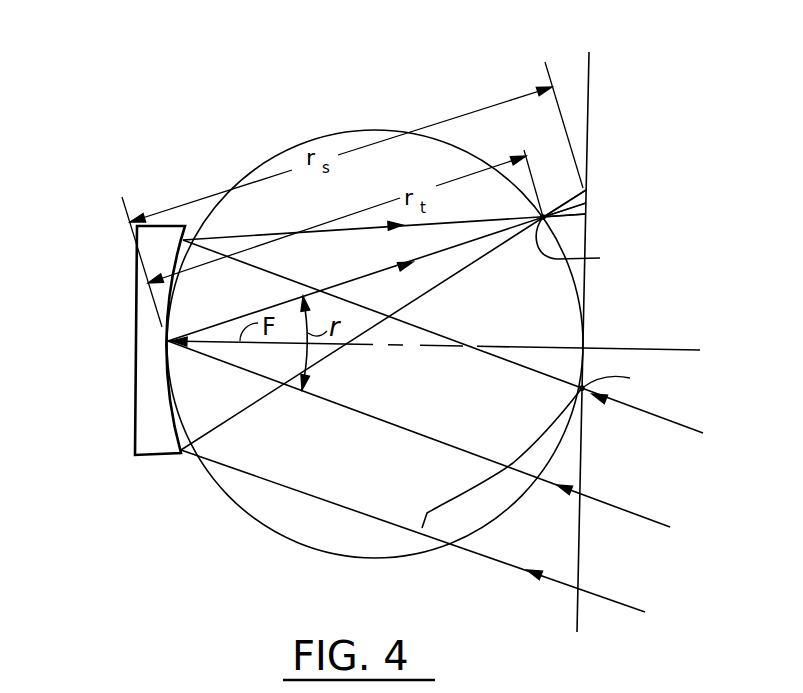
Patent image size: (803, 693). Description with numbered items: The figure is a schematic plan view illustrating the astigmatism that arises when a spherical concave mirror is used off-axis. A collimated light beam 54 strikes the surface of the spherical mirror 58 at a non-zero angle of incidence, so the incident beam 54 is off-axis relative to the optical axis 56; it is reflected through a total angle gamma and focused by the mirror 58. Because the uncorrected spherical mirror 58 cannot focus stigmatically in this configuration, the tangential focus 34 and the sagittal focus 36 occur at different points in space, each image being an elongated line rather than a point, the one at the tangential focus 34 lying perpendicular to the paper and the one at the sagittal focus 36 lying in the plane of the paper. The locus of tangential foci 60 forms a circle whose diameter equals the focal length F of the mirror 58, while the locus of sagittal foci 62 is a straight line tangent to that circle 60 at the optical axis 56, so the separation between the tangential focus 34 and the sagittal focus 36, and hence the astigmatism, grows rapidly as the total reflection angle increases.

The tangential focus 34 is at (600, 258).
The sagittal focus 36 is at (586, 203).
The collimated light beam 54 is at (590, 384).
The optical axis 56 is at (602, 348).
The spherical mirror 58 is at (128, 325).
The locus of tangential foci 60 is at (220, 504).
The locus of sagittal foci 62 is at (593, 98).